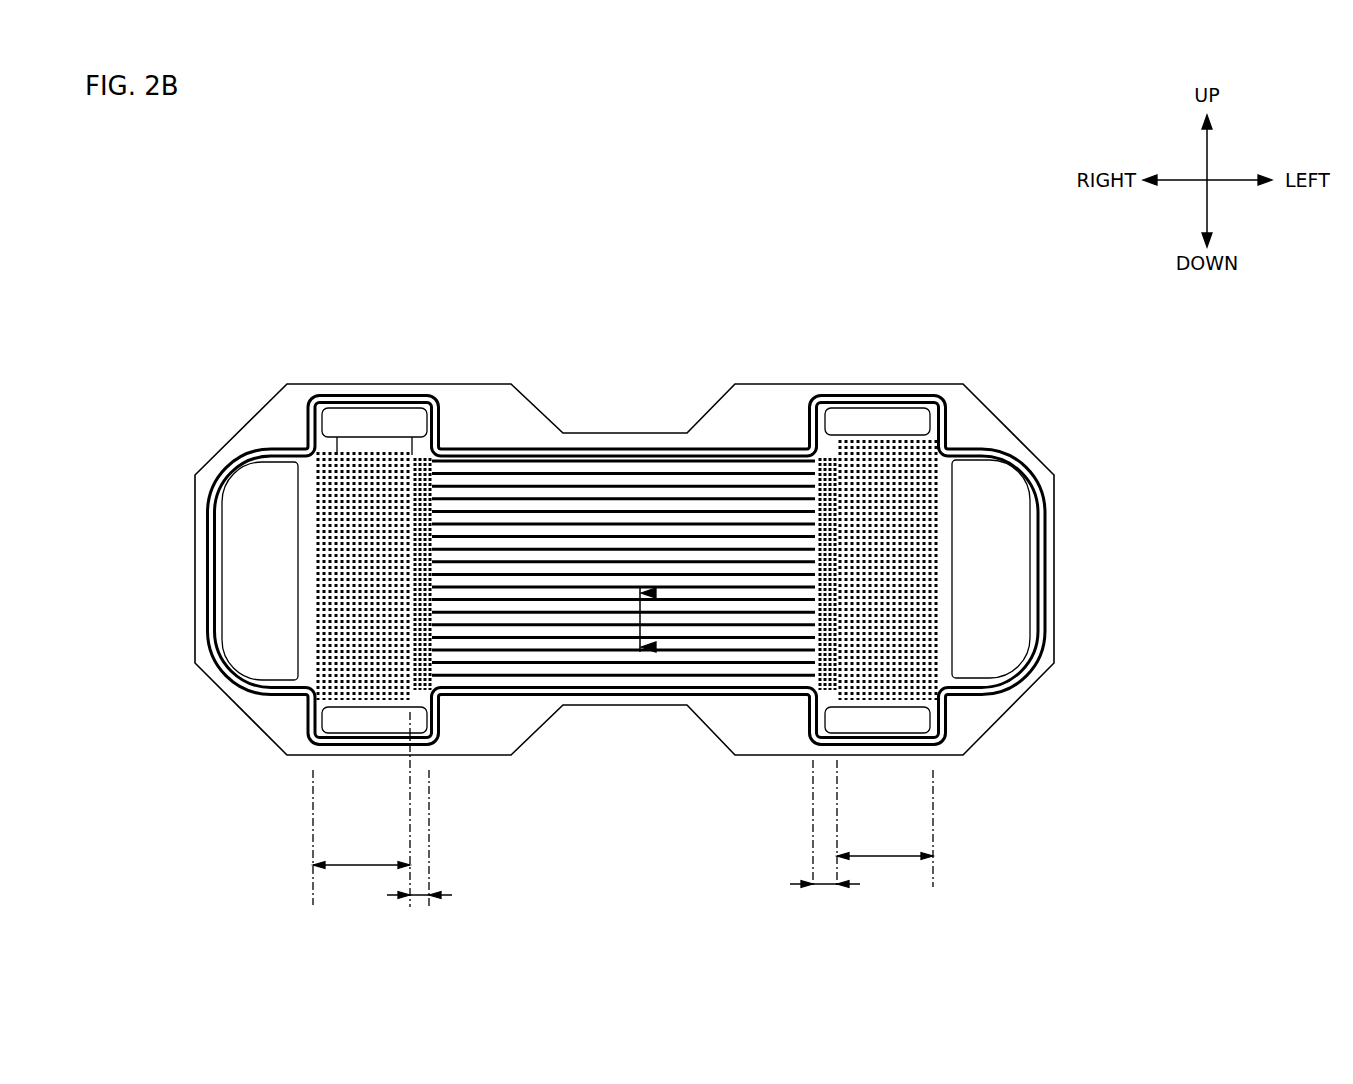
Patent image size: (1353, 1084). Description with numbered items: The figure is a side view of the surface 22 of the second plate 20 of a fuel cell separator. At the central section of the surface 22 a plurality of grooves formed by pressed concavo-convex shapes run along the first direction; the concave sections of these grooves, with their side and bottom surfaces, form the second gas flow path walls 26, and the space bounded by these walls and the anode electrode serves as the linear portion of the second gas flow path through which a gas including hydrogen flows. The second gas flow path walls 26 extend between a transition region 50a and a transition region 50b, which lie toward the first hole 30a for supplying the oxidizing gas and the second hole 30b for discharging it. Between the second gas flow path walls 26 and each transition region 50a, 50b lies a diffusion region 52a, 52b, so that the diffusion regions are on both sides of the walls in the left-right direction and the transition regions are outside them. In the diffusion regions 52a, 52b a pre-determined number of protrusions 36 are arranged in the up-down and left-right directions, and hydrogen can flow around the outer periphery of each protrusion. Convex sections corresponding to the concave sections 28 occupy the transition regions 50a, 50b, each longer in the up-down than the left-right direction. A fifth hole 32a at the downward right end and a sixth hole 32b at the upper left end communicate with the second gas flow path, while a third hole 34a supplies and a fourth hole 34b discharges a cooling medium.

The second plate 20 is at (606, 608).
The surface 22 is at (470, 755).
The second gas flow path walls 26 is at (590, 505).
The concave sections 28 is at (358, 507).
The first hole 30a is at (258, 558).
The second hole 30b is at (1008, 557).
The fifth hole 32a is at (393, 719).
The sixth hole 32b is at (880, 428).
The third hole 34a is at (862, 713).
The fourth hole 34b is at (403, 428).
The protrusions 36 is at (427, 508).
The transition region 50a is at (361, 877).
The transition region 50b is at (885, 869).
The diffusion region 52a is at (419, 914).
The diffusion region 52b is at (825, 899).